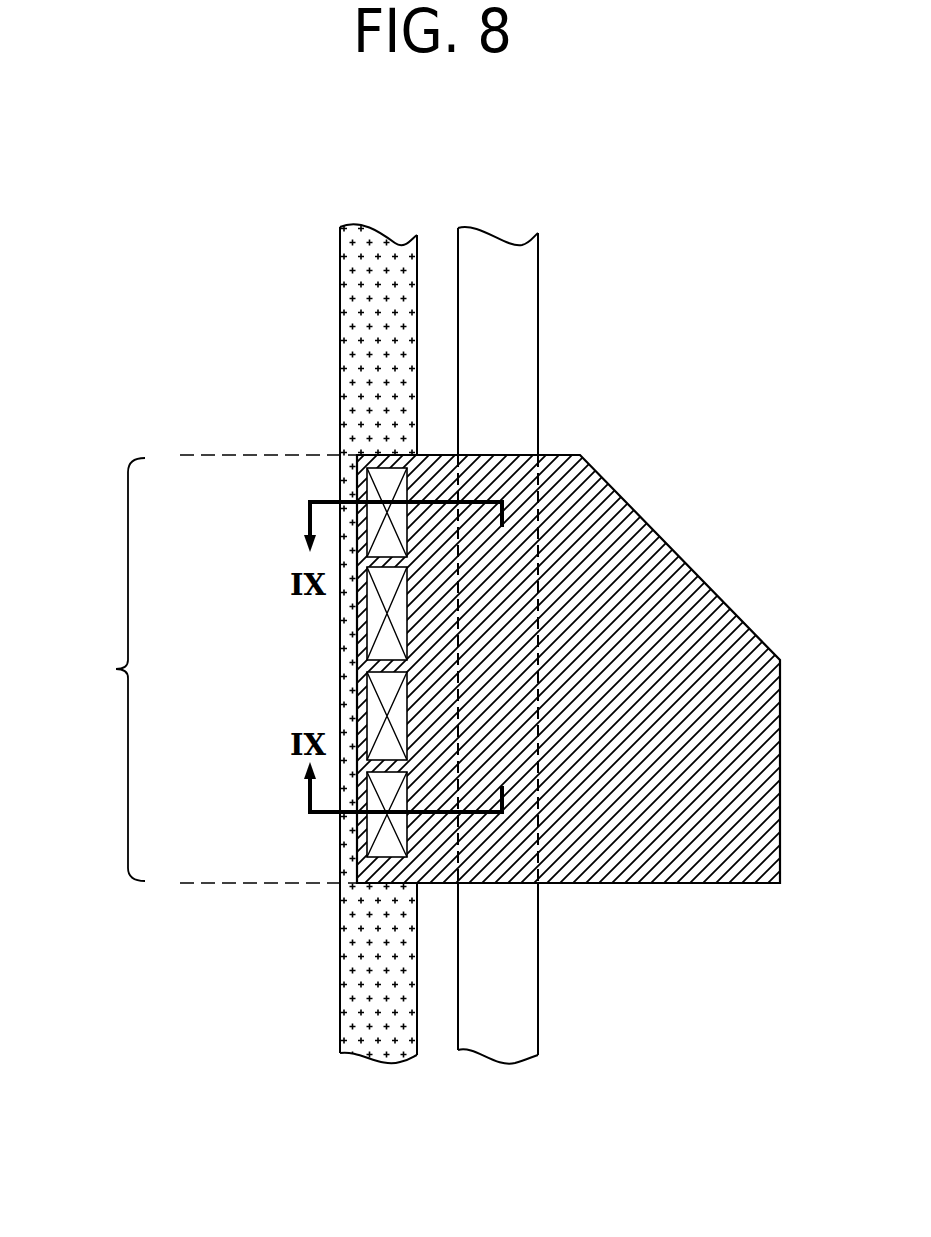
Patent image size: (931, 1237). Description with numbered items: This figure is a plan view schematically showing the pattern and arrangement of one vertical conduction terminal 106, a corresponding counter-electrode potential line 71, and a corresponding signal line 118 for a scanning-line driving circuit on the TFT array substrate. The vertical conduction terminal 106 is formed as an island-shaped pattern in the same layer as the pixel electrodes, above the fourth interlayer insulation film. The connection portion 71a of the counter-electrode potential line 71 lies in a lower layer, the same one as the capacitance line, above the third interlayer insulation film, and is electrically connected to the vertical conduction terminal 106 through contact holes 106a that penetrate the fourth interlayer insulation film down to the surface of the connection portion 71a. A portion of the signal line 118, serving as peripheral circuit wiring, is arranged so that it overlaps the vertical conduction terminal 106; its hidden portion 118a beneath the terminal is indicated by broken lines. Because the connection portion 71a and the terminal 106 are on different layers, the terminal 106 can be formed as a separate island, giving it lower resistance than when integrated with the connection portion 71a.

The counter-electrode potential line 71 is at (338, 318).
The connection portion of the counter-electrode potential line 71a is at (196, 669).
The signal line for the scanning-line driving circuit 118 is at (540, 305).
The hidden portion of plate 118 118a is at (567, 539).
The vertical conduction terminal 106 is at (732, 604).
The contact hole 106a is at (368, 712).